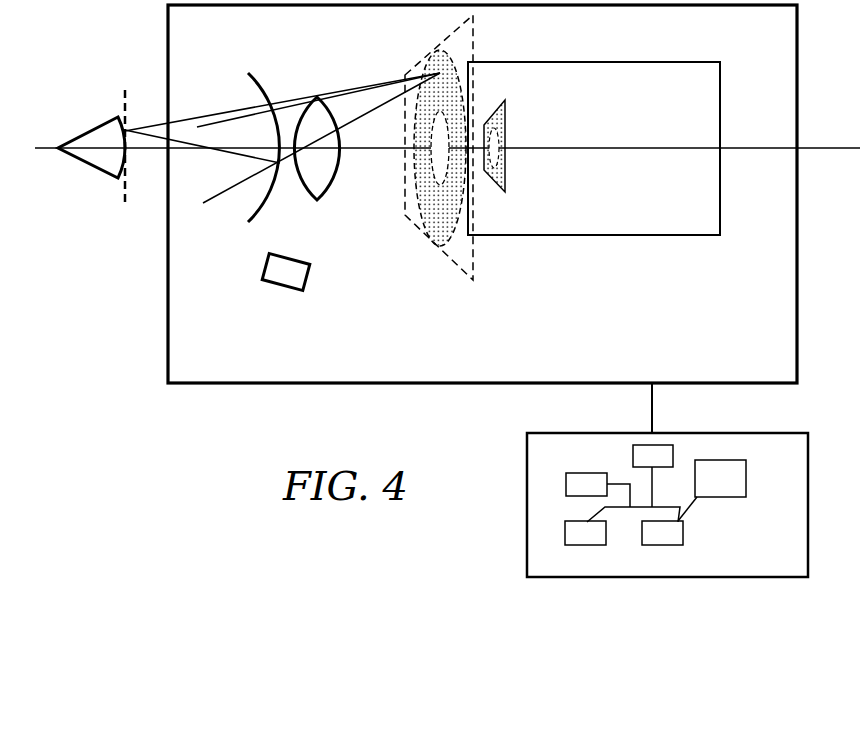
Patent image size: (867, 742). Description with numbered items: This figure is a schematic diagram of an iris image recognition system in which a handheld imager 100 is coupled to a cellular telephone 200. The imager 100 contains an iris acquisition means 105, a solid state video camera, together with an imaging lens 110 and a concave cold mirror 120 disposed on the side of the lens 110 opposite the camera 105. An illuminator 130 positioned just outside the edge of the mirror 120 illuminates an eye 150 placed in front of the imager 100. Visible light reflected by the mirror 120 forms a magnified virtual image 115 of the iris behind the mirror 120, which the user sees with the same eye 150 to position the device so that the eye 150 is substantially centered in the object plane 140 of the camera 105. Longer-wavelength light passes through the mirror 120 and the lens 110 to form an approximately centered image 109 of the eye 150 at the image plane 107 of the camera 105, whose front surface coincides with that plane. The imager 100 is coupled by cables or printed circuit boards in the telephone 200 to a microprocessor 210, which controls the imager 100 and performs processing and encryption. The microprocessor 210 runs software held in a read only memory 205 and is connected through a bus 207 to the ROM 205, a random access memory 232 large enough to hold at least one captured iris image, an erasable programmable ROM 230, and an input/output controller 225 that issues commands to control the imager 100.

The handheld imager 100 is at (788, 36).
The iris acquisition means 105 is at (713, 230).
The image plane 107 is at (497, 197).
The image of the iris 109 is at (488, 122).
The imaging lens 110 is at (333, 120).
The virtual image of the iris 115 is at (433, 225).
The mirror 120 is at (273, 110).
The illuminator 130 is at (280, 287).
The object plane 140 is at (123, 95).
The eye 150 is at (110, 121).
The cellular telephone 200 is at (800, 458).
The read only memory 205 is at (661, 546).
The bus 207 is at (680, 507).
The microprocessor 210 is at (738, 494).
The input/output controller 225 is at (567, 473).
The erasable programmable ROM 230 is at (583, 546).
The random access memory 232 is at (633, 458).